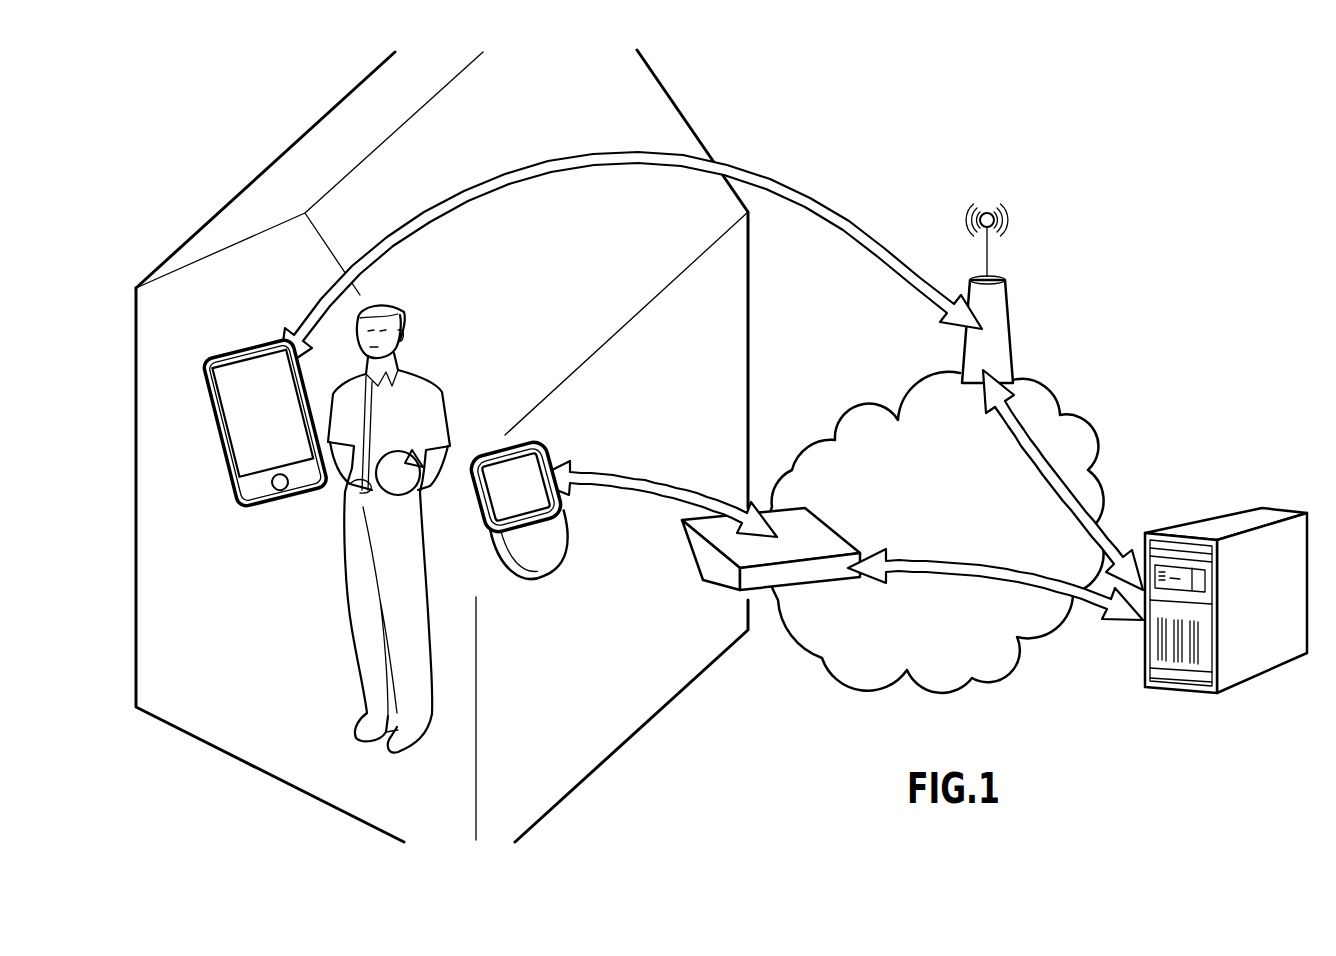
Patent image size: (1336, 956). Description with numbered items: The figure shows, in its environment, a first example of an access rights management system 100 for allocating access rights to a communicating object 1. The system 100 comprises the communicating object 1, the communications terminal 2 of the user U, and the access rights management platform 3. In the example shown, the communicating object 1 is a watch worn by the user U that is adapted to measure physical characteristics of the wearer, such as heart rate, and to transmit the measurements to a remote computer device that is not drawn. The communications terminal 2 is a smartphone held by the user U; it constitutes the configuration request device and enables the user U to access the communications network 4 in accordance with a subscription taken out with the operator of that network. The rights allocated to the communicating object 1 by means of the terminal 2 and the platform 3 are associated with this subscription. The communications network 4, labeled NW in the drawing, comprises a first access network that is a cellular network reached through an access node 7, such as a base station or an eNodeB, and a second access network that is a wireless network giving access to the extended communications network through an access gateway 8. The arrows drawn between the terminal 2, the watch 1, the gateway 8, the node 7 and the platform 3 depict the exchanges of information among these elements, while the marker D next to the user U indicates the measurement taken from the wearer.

The communicating object 1 is at (537, 565).
The communications terminal 2 is at (246, 342).
The access rights management platform 3 is at (1225, 528).
The communications network 4 is at (946, 532).
The access node 7 is at (1008, 322).
The access gateway 8 is at (840, 535).
The access rights management system 100 is at (1150, 300).
The user U is at (397, 306).
The detection / data D is at (470, 512).
The network NW is at (918, 645).